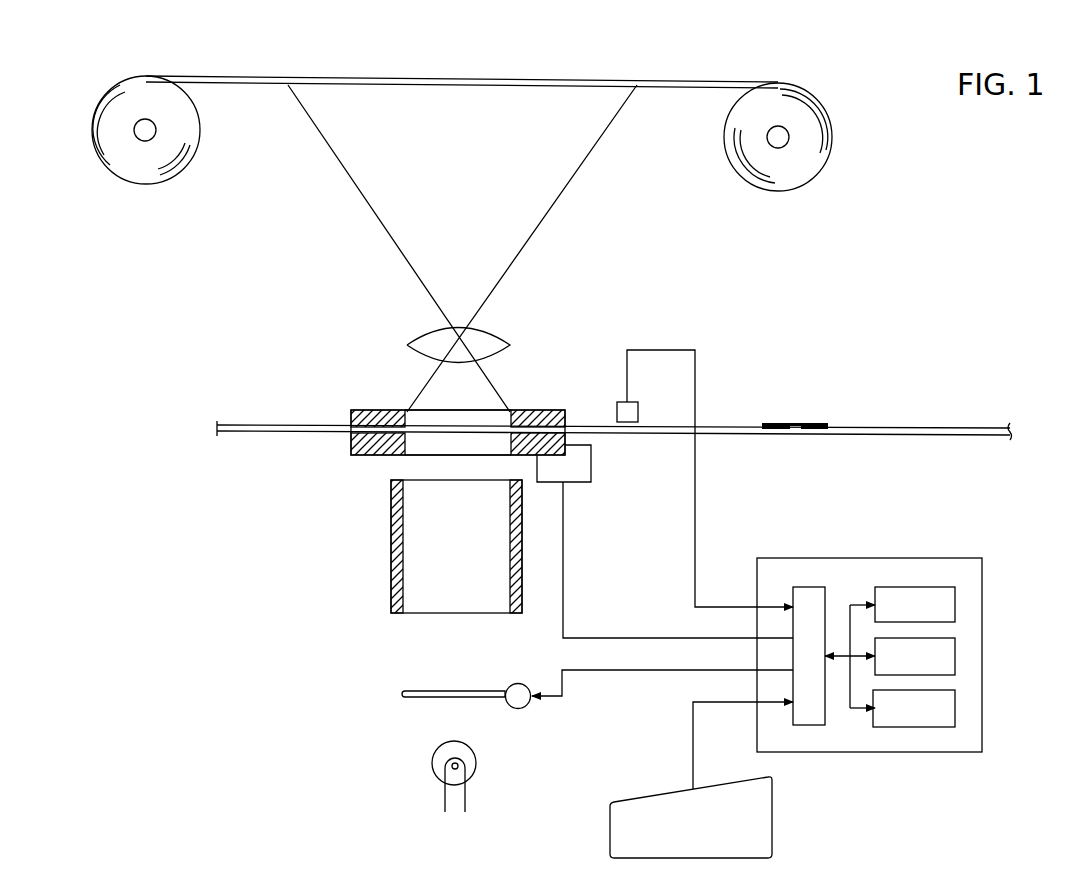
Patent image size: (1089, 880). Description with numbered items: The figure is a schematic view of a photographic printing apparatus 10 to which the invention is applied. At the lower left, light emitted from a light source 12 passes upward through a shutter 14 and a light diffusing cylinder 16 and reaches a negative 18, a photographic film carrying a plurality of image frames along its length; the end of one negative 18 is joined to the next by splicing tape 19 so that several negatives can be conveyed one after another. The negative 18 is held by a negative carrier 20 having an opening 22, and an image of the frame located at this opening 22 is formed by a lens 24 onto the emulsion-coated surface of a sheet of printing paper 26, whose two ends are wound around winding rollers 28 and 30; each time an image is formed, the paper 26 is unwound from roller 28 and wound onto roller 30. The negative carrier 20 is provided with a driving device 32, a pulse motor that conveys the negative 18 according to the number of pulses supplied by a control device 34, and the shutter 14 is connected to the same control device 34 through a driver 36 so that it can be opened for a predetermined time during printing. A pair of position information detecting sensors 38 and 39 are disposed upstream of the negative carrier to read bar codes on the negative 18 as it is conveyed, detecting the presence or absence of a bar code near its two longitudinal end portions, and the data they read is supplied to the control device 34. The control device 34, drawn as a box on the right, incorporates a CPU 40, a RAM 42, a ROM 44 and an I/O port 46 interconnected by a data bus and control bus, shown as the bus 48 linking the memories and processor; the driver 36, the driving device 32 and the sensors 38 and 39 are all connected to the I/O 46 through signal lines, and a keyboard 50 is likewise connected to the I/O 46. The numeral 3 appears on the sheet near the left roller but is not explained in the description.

The reel region 3 is at (227, 183).
The photographic printing apparatus 10 is at (905, 235).
The light source 12 is at (432, 762).
The shutter 14 is at (423, 690).
The light diffusing cylinder 16 is at (391, 557).
The negative 18 is at (262, 424).
The splicing tape 19 is at (820, 422).
The negative carrier 20 is at (548, 410).
The opening 22 is at (407, 434).
The lens 24 is at (500, 337).
The printing paper 26 is at (255, 76).
The winding roller 28 is at (778, 148).
The winding roller 30 is at (143, 141).
The driving device 32 is at (591, 458).
The control device 34 is at (930, 557).
The driver 36 is at (528, 706).
The position information detecting sensor 38 is at (689, 460).
The position information detecting sensor 39 is at (622, 400).
The CPU 40 is at (955, 658).
The RAM 42 is at (955, 606).
The ROM 44 is at (955, 710).
The I/O port 46 is at (813, 587).
The bus 48 is at (848, 692).
The keyboard 50 is at (610, 830).